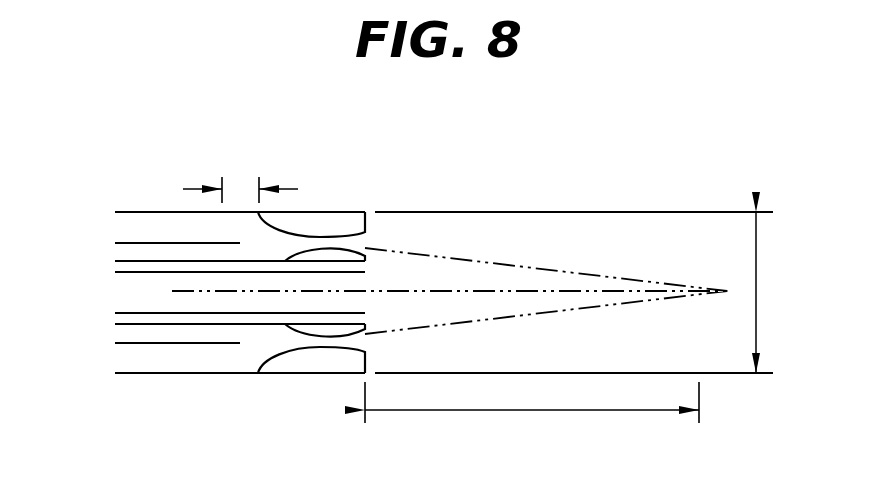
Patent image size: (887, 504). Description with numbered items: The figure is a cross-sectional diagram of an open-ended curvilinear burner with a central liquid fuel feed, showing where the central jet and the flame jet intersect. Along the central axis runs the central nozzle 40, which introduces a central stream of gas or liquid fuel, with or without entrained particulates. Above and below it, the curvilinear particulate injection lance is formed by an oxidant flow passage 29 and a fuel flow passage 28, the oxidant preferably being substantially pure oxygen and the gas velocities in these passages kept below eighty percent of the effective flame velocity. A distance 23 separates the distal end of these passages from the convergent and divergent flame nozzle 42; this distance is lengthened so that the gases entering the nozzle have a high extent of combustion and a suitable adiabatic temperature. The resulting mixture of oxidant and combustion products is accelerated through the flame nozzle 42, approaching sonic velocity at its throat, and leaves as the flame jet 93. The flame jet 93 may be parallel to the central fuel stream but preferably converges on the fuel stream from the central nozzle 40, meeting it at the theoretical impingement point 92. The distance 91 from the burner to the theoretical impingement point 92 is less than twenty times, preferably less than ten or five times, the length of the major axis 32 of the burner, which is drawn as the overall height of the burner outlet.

The distance 23 is at (240, 186).
The fuel flow passage 28 is at (128, 358).
The oxidant flow passage 29 is at (130, 232).
The major axis 32 is at (757, 302).
The central nozzle 40 is at (436, 293).
The convergent and divergent flame nozzle 42 is at (365, 222).
The distance 91 is at (514, 411).
The theoretical impingement point 92 is at (728, 290).
The flame jet 93 is at (522, 268).